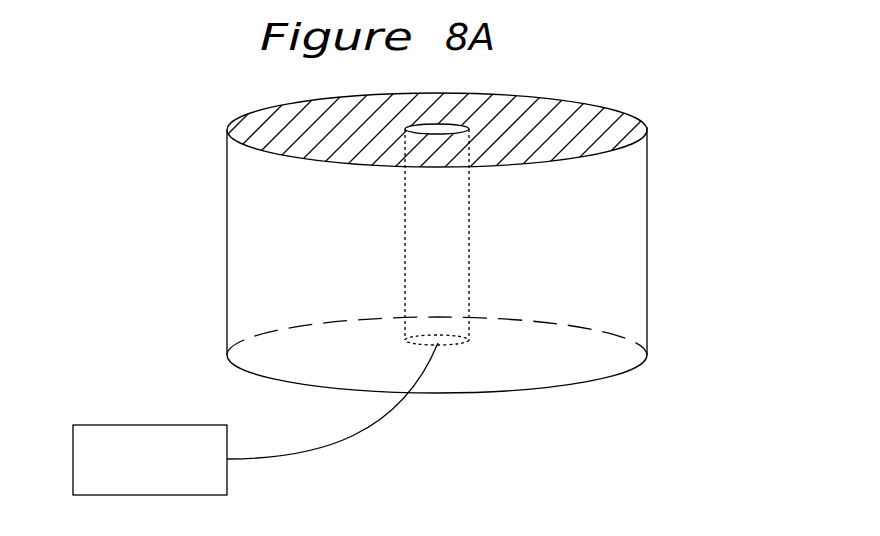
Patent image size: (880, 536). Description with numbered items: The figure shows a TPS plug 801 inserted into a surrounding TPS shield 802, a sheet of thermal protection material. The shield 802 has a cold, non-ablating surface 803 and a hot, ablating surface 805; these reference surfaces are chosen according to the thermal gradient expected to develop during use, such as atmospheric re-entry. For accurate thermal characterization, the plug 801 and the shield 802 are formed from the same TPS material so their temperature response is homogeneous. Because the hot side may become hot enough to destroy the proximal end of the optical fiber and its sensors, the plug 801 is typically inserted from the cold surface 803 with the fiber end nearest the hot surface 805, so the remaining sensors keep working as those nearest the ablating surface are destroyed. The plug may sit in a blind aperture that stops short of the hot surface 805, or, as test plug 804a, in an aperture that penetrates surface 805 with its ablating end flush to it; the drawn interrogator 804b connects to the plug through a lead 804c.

The TPS plug 801 is at (454, 126).
The TPS shield 802 is at (221, 172).
The cold surface 803 is at (600, 357).
The test plug 804a is at (405, 243).
The interrogator 804b is at (146, 443).
The cable 804c is at (340, 447).
The hot surface 805 is at (610, 112).